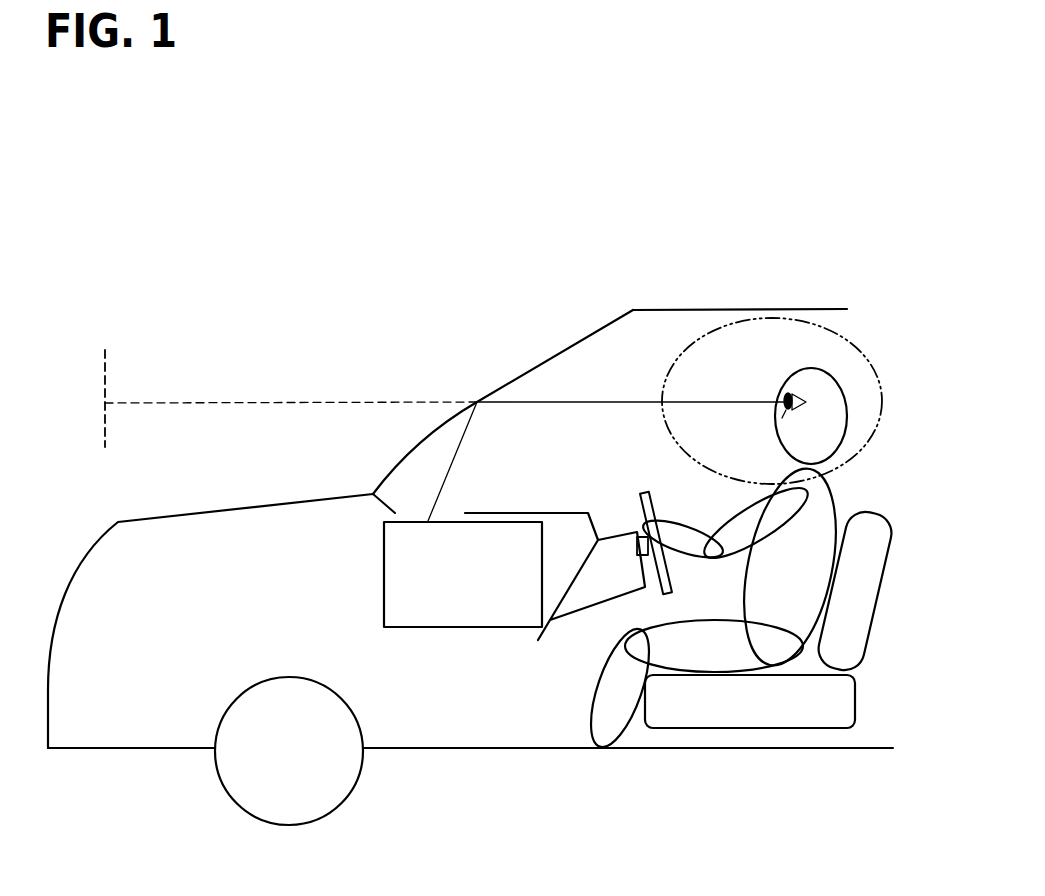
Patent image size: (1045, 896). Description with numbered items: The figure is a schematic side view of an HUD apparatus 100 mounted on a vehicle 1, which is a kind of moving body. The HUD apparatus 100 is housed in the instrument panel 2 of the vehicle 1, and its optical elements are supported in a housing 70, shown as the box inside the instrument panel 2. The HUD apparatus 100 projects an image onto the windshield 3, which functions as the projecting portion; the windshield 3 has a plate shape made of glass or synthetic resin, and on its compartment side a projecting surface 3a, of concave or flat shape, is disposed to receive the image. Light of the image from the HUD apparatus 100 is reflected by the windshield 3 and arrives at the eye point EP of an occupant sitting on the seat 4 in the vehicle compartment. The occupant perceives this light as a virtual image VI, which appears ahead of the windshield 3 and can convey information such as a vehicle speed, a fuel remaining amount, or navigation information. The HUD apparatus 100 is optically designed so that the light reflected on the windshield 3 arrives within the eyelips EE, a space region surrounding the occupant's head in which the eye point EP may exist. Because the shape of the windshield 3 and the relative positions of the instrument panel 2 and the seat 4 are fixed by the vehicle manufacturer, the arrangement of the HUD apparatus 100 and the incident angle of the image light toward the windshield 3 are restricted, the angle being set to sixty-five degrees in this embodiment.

The vehicle 1 is at (820, 309).
The instrument panel 2 is at (557, 513).
The windshield 3 is at (405, 460).
The projecting surface 3a is at (512, 384).
The seat 4 is at (857, 700).
The housing 70 is at (384, 570).
The HUD apparatus 100 is at (432, 614).
The virtual image VI is at (105, 365).
The eyelips EE is at (852, 345).
The eye point EP is at (786, 386).